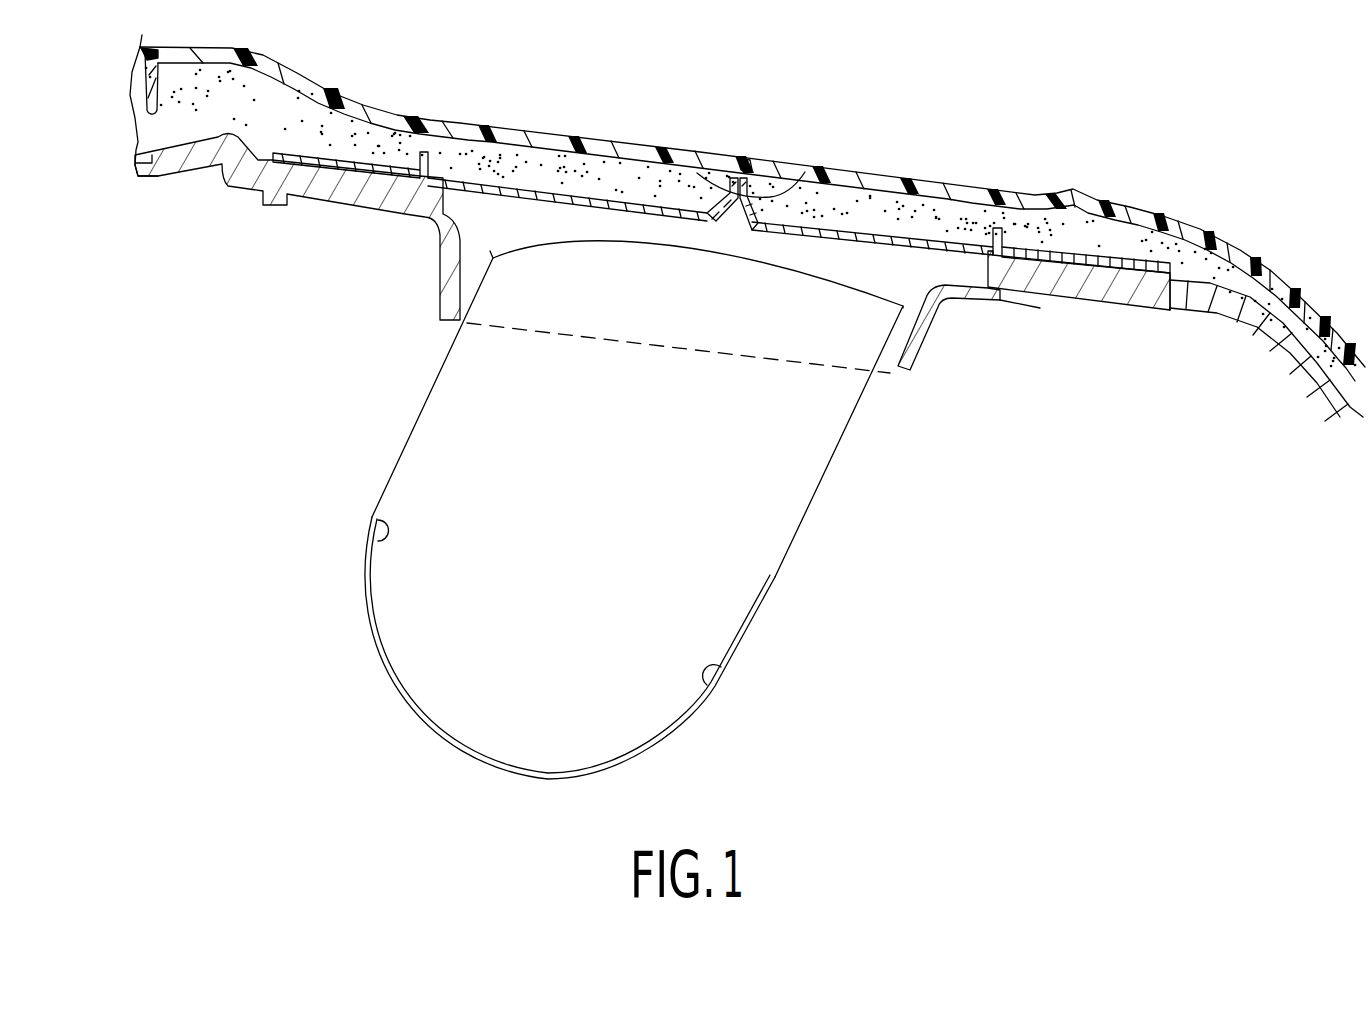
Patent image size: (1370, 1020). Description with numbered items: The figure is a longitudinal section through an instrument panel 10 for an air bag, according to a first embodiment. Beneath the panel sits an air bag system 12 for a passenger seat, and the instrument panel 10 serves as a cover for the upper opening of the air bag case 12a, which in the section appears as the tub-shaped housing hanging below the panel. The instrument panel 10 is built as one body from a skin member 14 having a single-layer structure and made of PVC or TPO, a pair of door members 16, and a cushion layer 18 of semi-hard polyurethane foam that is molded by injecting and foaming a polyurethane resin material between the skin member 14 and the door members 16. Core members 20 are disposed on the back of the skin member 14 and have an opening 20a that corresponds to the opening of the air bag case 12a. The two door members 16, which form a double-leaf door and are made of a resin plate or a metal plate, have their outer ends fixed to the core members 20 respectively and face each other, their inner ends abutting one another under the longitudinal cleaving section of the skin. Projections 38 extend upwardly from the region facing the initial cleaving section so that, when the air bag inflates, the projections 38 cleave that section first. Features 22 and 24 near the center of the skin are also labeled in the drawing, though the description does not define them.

The instrument panel 10 is at (747, 228).
The air bag system 12 is at (612, 510).
The air bag case 12a is at (773, 520).
The skin member 14 is at (953, 184).
The door member 16 is at (597, 207).
The cushion layer 18 is at (1127, 223).
The core member 20 is at (340, 193).
The opening 20a is at (977, 280).
The clip 22 is at (741, 152).
The opening 24 is at (758, 167).
The projection 38 is at (713, 181).